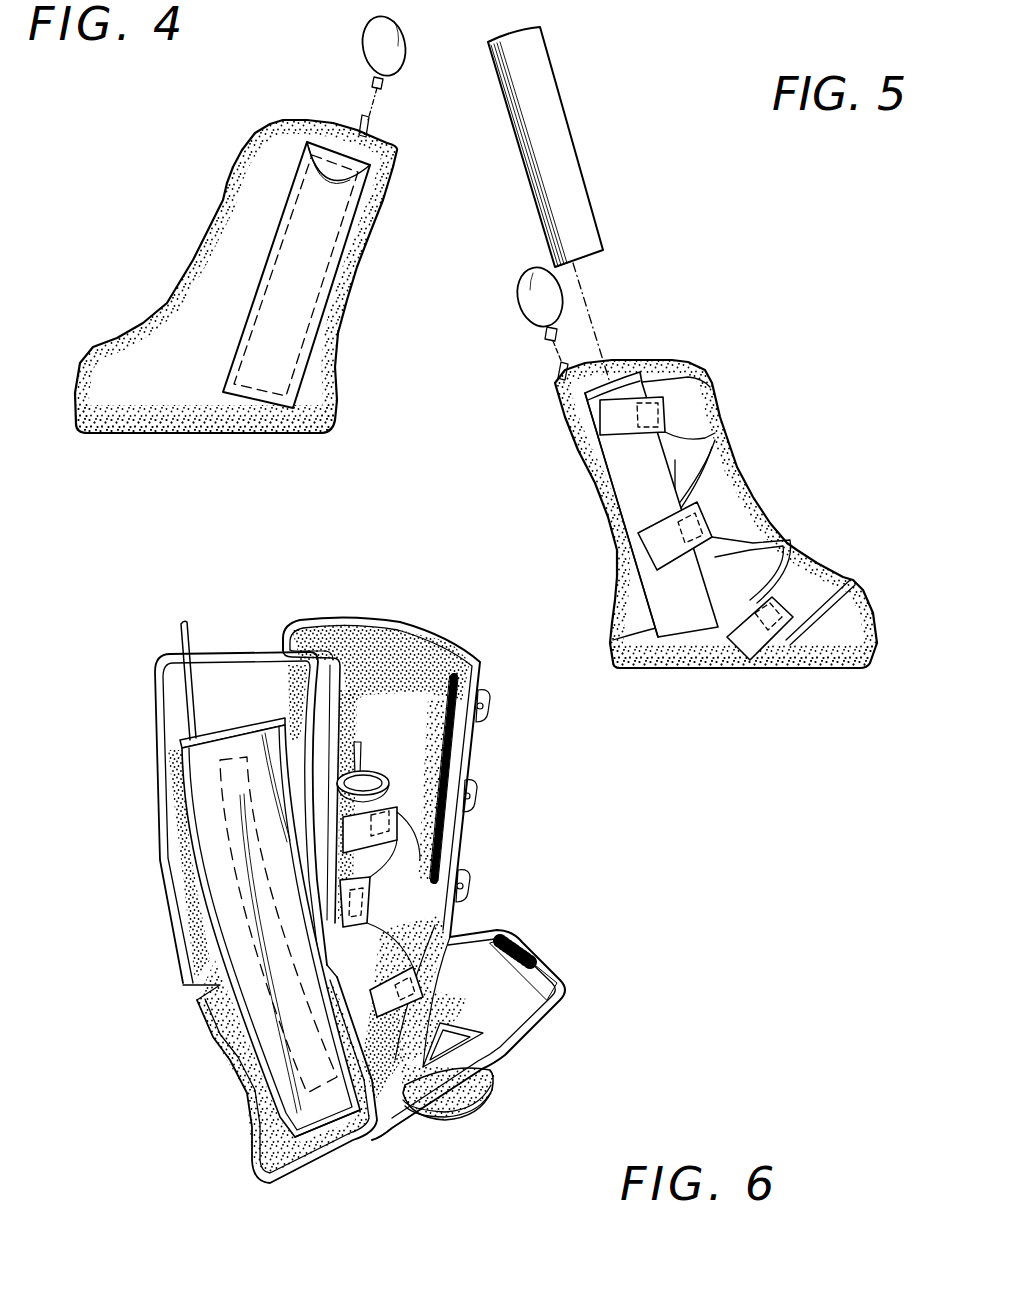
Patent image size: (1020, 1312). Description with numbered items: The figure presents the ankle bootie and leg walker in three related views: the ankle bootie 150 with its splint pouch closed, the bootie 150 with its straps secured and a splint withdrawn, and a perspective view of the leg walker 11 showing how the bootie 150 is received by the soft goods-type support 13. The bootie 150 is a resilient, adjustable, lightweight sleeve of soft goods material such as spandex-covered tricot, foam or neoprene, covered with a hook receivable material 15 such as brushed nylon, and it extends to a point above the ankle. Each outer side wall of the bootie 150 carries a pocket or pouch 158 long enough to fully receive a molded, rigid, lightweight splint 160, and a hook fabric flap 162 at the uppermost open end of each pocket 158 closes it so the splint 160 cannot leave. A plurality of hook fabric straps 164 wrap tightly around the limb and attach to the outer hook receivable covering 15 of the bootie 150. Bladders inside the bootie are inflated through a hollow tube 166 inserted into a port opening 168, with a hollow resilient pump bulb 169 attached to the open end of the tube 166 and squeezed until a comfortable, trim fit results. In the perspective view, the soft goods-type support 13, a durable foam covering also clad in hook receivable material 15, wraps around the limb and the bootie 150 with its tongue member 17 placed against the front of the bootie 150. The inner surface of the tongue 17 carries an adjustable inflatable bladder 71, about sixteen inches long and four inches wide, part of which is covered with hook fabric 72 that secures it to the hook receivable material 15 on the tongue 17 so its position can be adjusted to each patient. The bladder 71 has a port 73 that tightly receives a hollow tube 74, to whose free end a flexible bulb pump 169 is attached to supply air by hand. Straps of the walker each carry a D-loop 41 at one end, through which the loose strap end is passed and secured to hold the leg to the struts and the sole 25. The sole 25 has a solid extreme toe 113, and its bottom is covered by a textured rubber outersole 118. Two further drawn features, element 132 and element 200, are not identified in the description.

In FIG. 6, the leg walker 11 is at (196, 1074).
In FIG. 6, the soft goods-type support 13 is at (367, 623).
In FIG. 5, the VELCRO hook receivable material 15 is at (660, 637).
In FIG. 6, the tongue member 17 is at (240, 693).
In FIG. 6, the sole 25 is at (500, 1073).
In FIG. 6, the D-loop 41 is at (490, 697).
In FIG. 6, the inflatable bladder 71 is at (217, 900).
In FIG. 6, the VELCRO hook fabric 72 is at (323, 1093).
In FIG. 6, the port 73 is at (183, 742).
In FIG. 6, the hollow tube 74 is at (177, 637).
In FIG. 6, the extreme toe 113 is at (467, 1118).
In FIG. 6, the textured rubber outersole 118 is at (440, 1121).
In FIG. 6, the inner shell 132 is at (153, 811).
In FIG. 4, the ankle bootie 150 is at (352, 307).
In FIG. 5, the ankle bootie 150 is at (797, 680).
In FIG. 6, the ankle bootie 150 is at (473, 1013).
In FIG. 4, the pocket 158 is at (363, 233).
In FIG. 5, the pocket 158 is at (622, 485).
In FIG. 4, the splint 160 is at (270, 250).
In FIG. 5, the splint 160 is at (558, 174).
In FIG. 4, the VELCRO hook fabric flap 162 is at (326, 162).
In FIG. 5, the VELCRO hook fabric straps 164 is at (607, 425).
In FIG. 6, the VELCRO hook fabric straps 164 is at (367, 900).
In FIG. 4, the hollow tube 166 is at (370, 124).
In FIG. 5, the hollow tube 166 is at (560, 372).
In FIG. 6, the hollow tube 166 is at (358, 745).
In FIG. 6, the port opening 168 is at (364, 773).
In FIG. 4, the pump bulb 169 is at (368, 42).
In FIG. 5, the pump bulb 169 is at (540, 313).
In FIG. 6, the heel pad 200 is at (490, 1083).